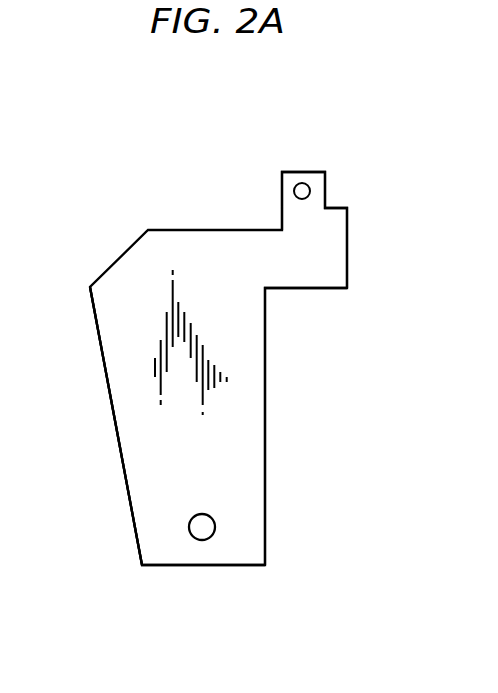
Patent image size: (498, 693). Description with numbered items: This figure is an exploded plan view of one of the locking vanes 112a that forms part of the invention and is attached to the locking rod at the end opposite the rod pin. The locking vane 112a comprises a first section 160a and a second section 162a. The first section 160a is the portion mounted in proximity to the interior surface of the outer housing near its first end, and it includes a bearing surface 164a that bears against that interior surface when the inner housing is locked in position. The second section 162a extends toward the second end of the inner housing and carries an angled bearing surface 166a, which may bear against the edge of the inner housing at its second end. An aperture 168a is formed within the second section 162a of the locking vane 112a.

The locking vane 112a is at (186, 157).
The first section 160a is at (324, 336).
The second section 162a is at (76, 427).
The bearing surface 164a is at (348, 231).
The angled bearing surface 166a is at (101, 352).
The aperture 168a is at (203, 528).